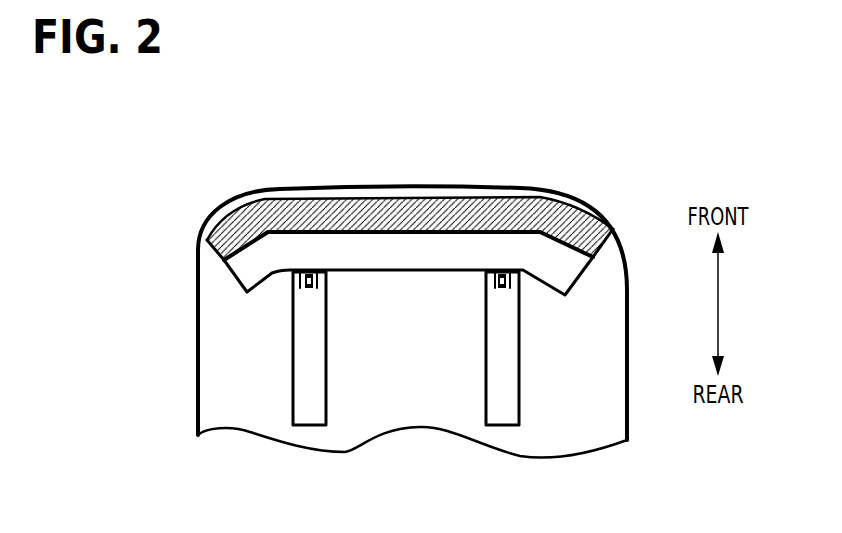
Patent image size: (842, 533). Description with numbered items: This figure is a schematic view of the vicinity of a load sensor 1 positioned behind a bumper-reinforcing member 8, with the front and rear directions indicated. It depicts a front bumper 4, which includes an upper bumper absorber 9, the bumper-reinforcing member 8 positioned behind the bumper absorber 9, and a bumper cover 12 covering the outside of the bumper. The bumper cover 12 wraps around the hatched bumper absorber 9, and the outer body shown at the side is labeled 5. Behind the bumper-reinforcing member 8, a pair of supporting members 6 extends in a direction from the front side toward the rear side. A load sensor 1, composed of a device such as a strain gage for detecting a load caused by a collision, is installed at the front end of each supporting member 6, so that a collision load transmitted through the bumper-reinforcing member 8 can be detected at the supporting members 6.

The load sensor 1 is at (327, 282).
The front bumper 4 is at (528, 174).
The headrest frame 5 is at (197, 360).
The supporting member 6 is at (325, 413).
The bumper-reinforcing member 8 is at (400, 270).
The upper bumper absorber 9 is at (235, 216).
The bumper cover 12 is at (449, 188).